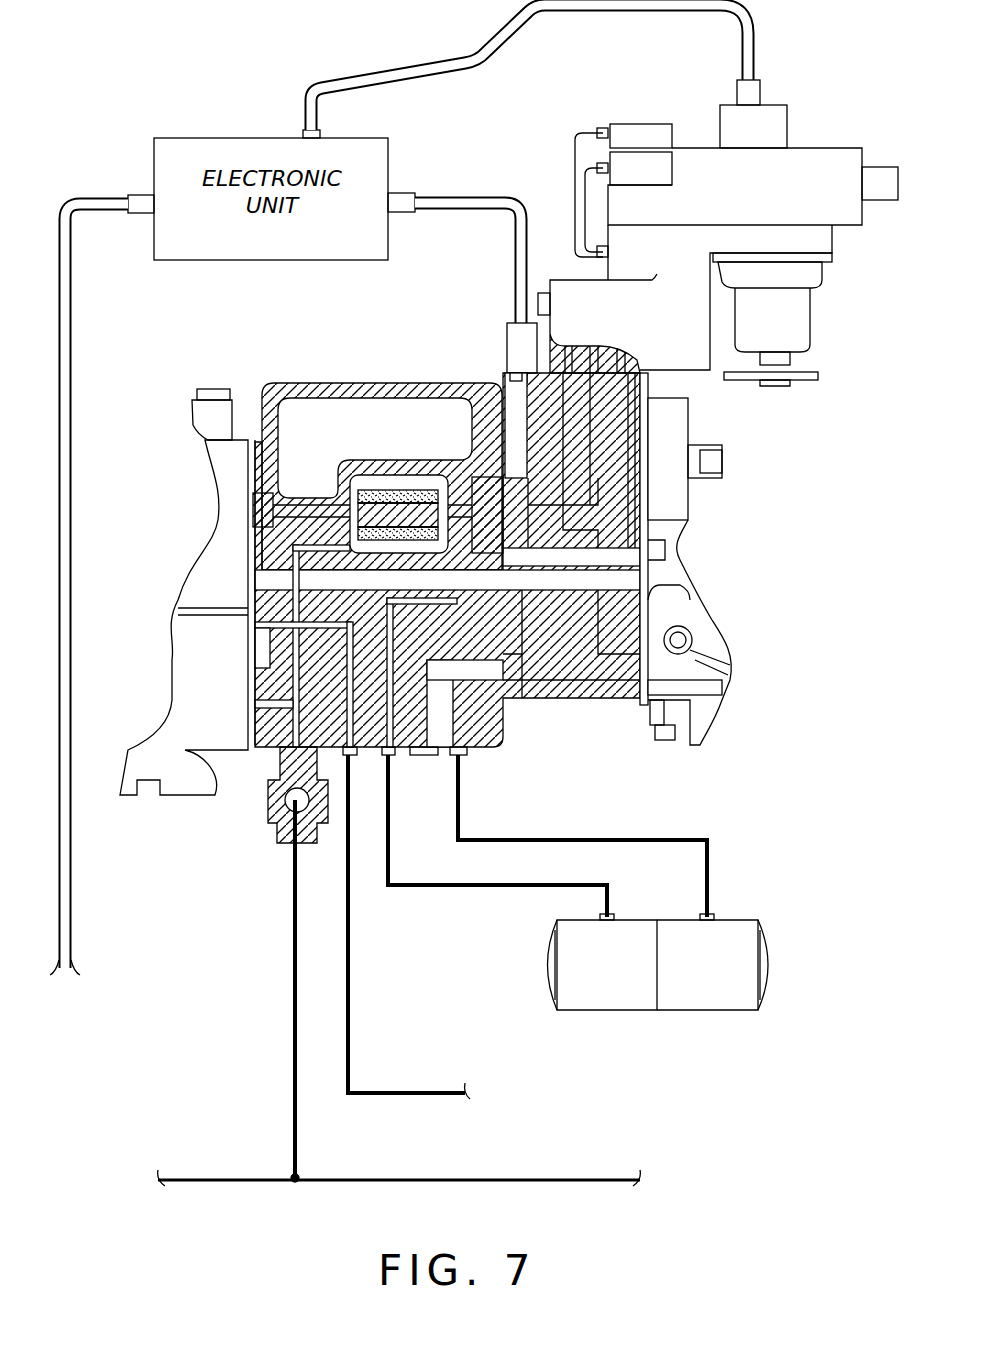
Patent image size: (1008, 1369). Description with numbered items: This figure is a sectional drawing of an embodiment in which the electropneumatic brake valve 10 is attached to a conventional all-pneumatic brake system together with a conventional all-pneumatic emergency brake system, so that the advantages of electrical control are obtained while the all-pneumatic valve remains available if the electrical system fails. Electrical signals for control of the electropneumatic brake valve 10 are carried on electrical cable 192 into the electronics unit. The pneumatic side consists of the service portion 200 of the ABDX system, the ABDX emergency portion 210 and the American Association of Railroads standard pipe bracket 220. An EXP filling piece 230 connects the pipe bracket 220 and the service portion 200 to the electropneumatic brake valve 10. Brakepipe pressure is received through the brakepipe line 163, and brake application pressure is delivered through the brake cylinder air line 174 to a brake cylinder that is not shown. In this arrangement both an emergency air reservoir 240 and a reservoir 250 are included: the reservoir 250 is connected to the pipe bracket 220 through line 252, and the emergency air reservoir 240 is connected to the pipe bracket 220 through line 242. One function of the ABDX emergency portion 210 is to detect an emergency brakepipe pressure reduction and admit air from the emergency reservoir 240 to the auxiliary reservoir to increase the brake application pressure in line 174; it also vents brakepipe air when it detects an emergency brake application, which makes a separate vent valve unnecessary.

The electropneumatic brake valve 10 is at (822, 110).
The brakepipe line 163 is at (293, 1052).
The brake cylinder air line 174 is at (413, 1090).
The electrical cable 192 is at (72, 923).
The service portion 200 is at (561, 580).
The ABDX emergency portion 210 is at (178, 535).
The pipe bracket 220 is at (345, 385).
The EXP filling piece 230 is at (575, 700).
The emergency air reservoir 240 is at (607, 1000).
The line 242 is at (457, 885).
The reservoir 250 is at (703, 1000).
The line 252 is at (637, 840).